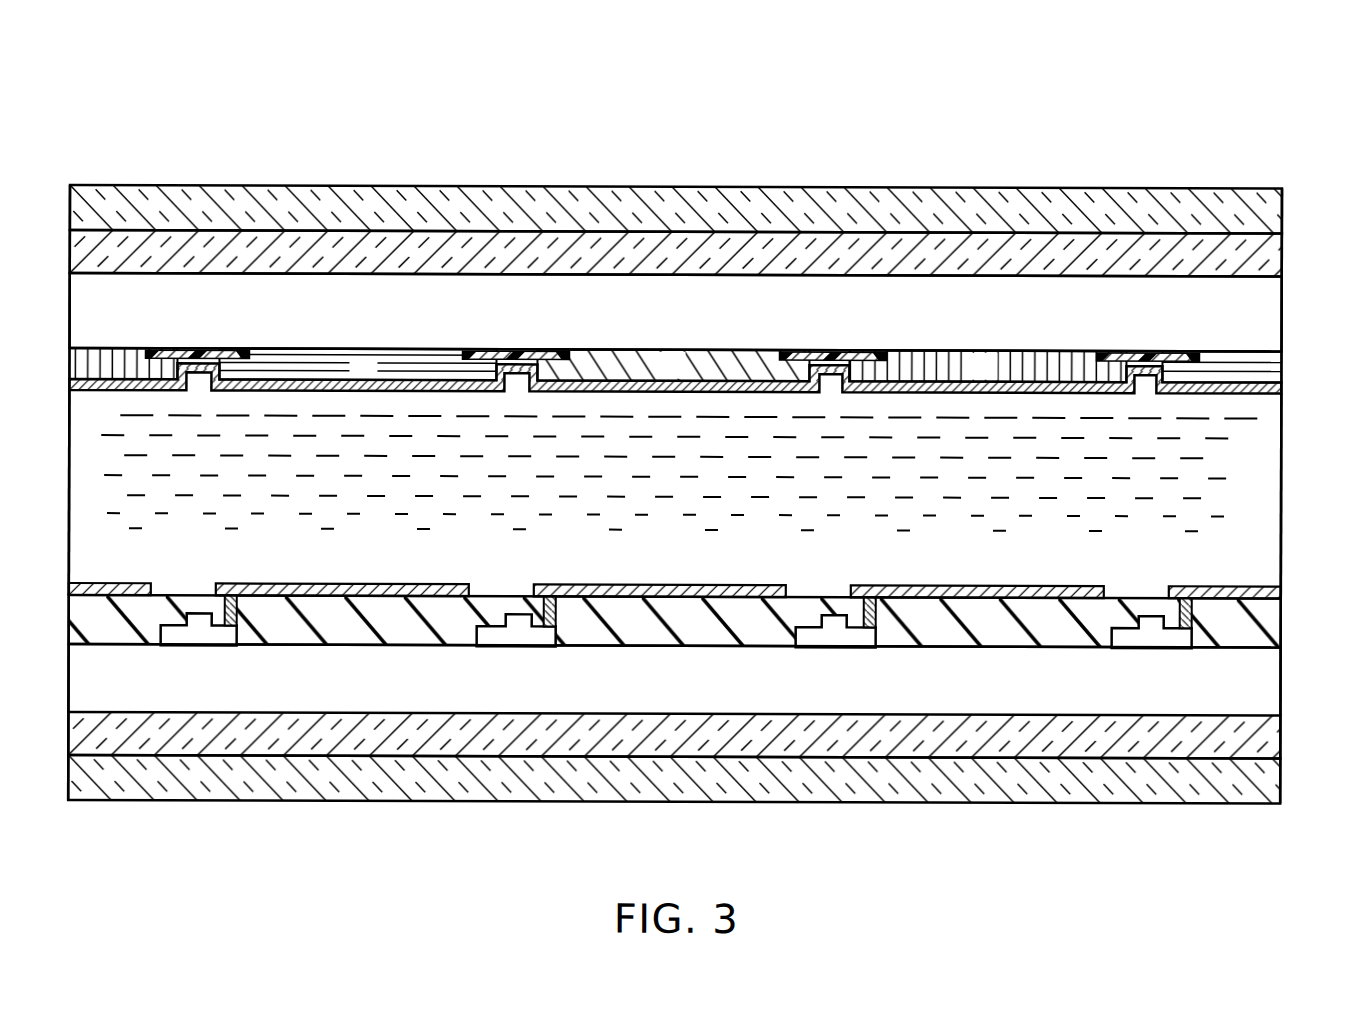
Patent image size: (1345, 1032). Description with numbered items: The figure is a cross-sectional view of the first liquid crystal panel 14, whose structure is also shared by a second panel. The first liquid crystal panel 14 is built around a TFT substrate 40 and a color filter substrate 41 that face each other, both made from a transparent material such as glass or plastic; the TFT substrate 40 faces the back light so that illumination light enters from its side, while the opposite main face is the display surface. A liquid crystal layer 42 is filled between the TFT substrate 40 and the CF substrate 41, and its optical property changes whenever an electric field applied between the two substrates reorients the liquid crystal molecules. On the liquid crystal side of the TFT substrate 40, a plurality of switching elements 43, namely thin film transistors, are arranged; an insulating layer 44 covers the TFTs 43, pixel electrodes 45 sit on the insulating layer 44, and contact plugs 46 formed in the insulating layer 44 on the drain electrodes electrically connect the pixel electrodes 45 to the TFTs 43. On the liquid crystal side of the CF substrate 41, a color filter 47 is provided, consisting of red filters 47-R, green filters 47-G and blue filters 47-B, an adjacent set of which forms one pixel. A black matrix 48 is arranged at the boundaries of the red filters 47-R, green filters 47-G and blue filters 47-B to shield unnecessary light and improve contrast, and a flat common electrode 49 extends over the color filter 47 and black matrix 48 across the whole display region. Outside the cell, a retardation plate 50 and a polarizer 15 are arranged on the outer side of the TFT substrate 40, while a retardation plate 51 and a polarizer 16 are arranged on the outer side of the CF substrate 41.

The first liquid crystal panel 14 is at (910, 86).
The polarizer 15 is at (1268, 783).
The polarizer 16 is at (1268, 216).
The TFT substrate 40 is at (1268, 691).
The color filter substrate 41 is at (1268, 318).
The liquid crystal layer 42 is at (1268, 468).
The switching element 43 is at (817, 637).
The insulating layer 44 is at (1274, 636).
The pixel electrode 45 is at (977, 597).
The contact plug 46 is at (877, 620).
The color filter 47 is at (990, 132).
The red filter 47-R is at (322, 365).
The green filter 47-G is at (640, 362).
The blue filter 47-B is at (948, 362).
The black matrix 48 is at (1141, 357).
The common electrode 49 is at (1268, 391).
The retardation plate 50 is at (1268, 741).
The retardation plate 51 is at (1268, 260).